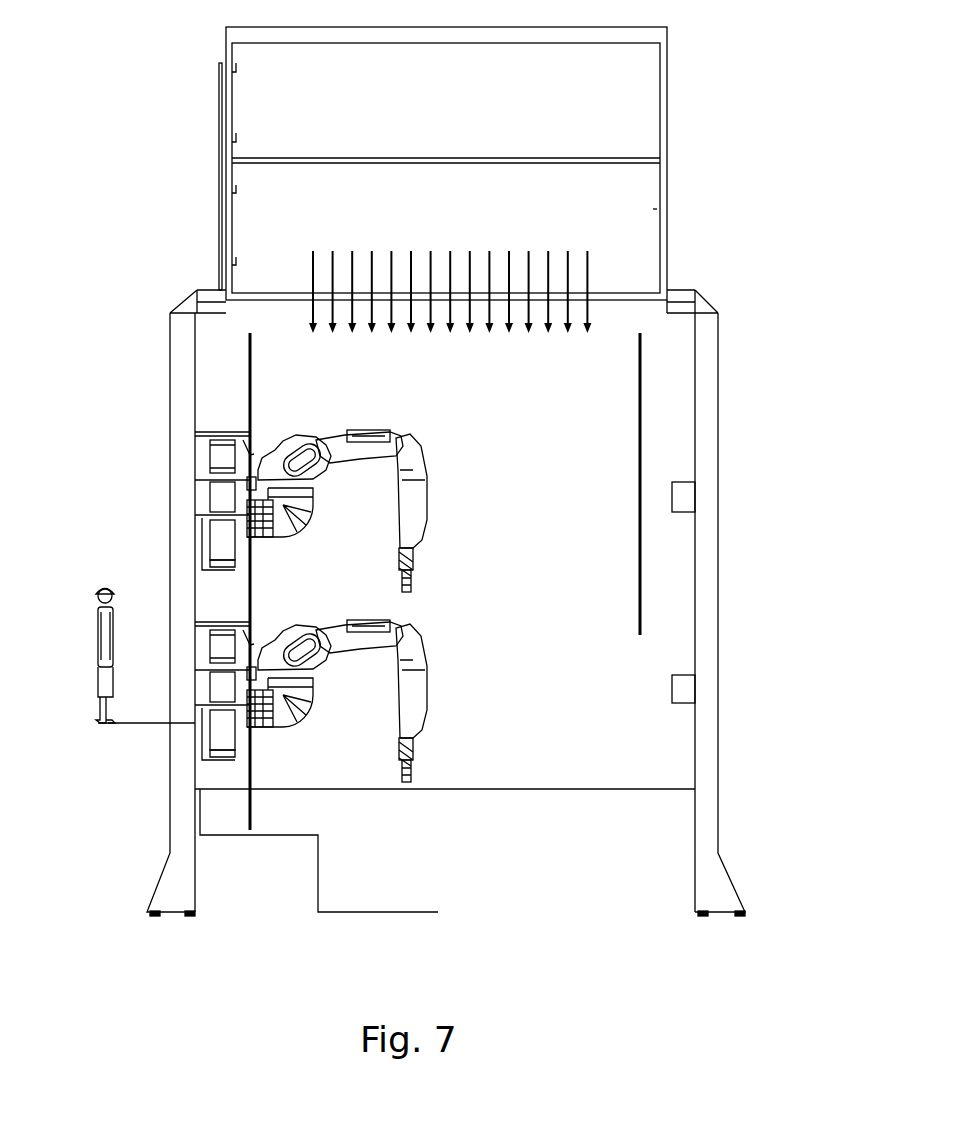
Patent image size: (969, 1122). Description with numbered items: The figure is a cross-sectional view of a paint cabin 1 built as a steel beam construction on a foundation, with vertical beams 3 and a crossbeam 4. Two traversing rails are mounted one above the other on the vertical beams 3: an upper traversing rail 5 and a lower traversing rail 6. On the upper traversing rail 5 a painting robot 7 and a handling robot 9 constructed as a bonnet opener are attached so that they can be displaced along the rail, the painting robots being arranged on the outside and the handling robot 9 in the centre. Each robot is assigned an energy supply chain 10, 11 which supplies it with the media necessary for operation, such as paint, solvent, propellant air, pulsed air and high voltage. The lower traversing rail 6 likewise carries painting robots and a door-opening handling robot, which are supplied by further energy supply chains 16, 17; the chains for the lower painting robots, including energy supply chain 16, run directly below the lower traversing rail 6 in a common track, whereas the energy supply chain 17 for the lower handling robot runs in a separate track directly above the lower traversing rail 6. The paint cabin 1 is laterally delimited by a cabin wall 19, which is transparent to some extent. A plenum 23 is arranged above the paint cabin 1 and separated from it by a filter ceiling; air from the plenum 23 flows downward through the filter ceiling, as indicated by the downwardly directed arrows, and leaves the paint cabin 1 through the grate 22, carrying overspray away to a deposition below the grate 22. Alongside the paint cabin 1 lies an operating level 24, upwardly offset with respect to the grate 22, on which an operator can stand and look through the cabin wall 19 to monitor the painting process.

The paint cabin 1 is at (484, 940).
The vertical beams 3 is at (708, 422).
The crossbeam 4 is at (605, 295).
The upper traversing rail 5 is at (220, 497).
The lower traversing rail 6 is at (222, 688).
The painting robot 7 is at (436, 472).
The handling robot 9 is at (437, 652).
The energy supply chain 10 is at (205, 452).
The energy supply chain 11 is at (220, 550).
The energy supply chain 16 is at (200, 738).
The energy supply chain 17 is at (227, 657).
The cabin wall 19 is at (250, 398).
The grate 22 is at (568, 788).
The plenum 23 is at (192, 166).
The operating level 24 is at (100, 620).